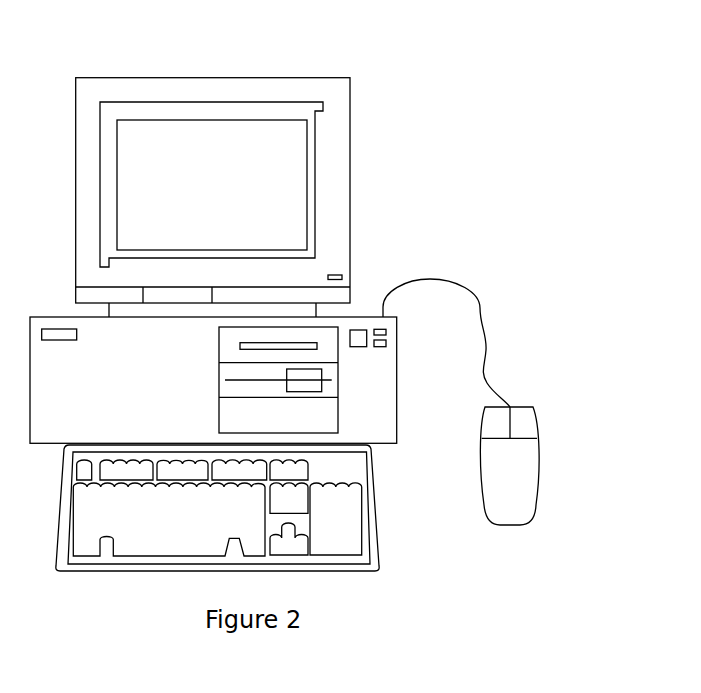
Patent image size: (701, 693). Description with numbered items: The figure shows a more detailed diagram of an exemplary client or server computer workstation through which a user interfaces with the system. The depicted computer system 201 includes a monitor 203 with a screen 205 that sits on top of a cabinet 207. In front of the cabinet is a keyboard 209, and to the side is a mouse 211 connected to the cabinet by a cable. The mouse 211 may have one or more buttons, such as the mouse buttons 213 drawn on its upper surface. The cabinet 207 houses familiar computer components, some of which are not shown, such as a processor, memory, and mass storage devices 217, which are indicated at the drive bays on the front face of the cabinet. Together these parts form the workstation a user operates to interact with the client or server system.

The computer system 201 is at (367, 62).
The monitor 203 is at (350, 173).
The screen 205 is at (236, 182).
The cabinet 207 is at (124, 379).
The keyboard 209 is at (199, 529).
The mouse 211 is at (529, 479).
The mouse buttons 213 is at (513, 415).
The mass storage devices 217 is at (330, 335).